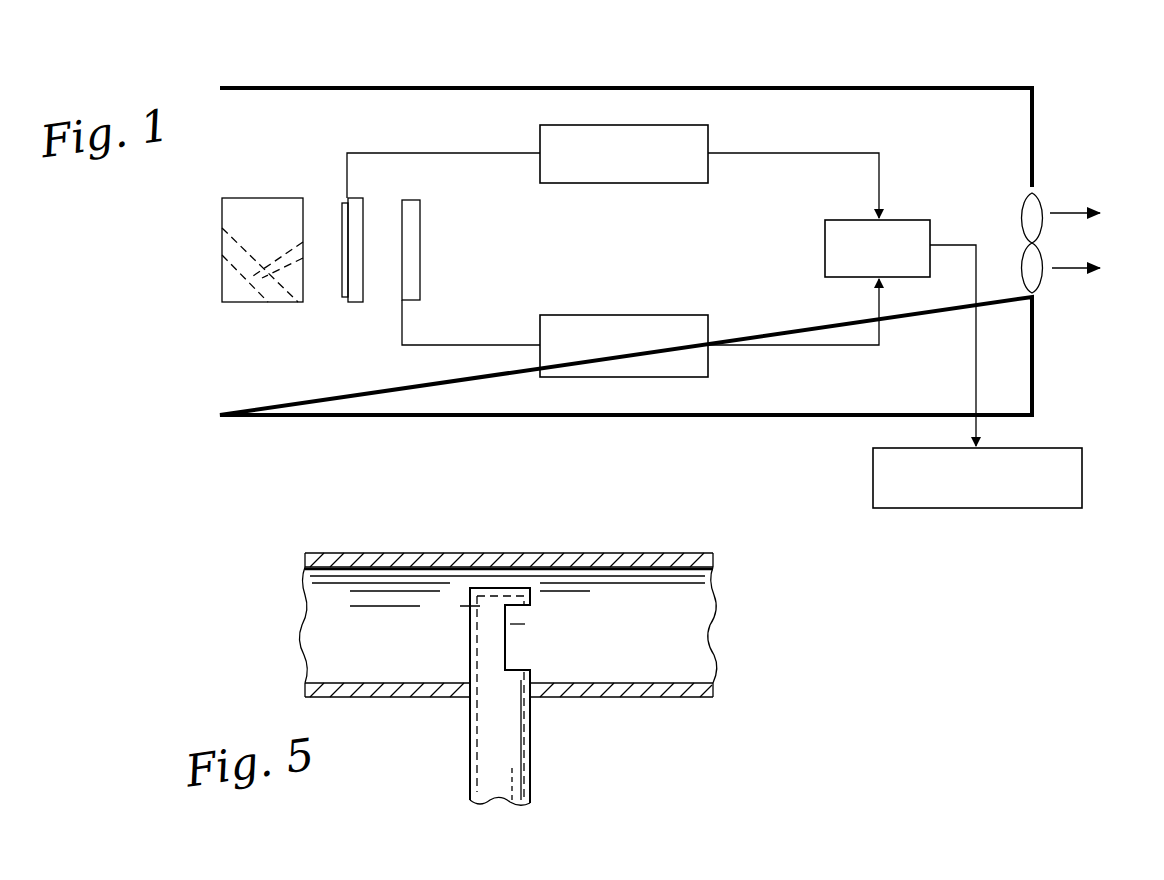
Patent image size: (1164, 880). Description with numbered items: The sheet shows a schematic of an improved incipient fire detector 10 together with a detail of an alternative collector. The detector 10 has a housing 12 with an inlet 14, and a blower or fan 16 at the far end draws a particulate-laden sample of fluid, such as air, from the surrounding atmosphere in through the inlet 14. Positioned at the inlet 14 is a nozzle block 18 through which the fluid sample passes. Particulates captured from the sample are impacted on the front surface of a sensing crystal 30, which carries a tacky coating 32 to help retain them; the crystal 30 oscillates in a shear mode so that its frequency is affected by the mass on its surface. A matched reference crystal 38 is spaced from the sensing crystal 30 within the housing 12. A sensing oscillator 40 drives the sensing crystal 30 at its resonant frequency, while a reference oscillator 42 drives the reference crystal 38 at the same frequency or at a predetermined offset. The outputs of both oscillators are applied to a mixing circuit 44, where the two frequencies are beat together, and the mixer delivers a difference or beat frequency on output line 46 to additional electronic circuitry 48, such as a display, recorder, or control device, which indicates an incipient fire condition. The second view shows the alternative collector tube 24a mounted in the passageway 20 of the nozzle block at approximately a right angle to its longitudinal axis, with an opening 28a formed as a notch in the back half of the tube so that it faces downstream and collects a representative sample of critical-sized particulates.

In FIG. 1, the incipient fire detector 10 is at (734, 70).
In FIG. 1, the housing 12 is at (843, 87).
In FIG. 1, the inlet 14 is at (208, 230).
In FIG. 1, the blower or fan 16 is at (1040, 200).
In FIG. 1, the nozzle block 18 is at (270, 198).
In FIG. 1, the sensing crystal 30 is at (354, 302).
In FIG. 1, the tacky coating 32 is at (340, 205).
In FIG. 1, the reference crystal 38 is at (420, 300).
In FIG. 1, the sensing oscillator 40 is at (630, 125).
In FIG. 1, the reference oscillator 42 is at (610, 377).
In FIG. 1, the mixing circuit 44 is at (907, 220).
In FIG. 1, the output line 46 is at (976, 392).
In FIG. 1, the electronic circuitry 48 is at (1082, 463).
In FIG. 5, the passageway 20 is at (572, 592).
In FIG. 5, the collector tube 24a is at (467, 625).
In FIG. 5, the opening 28a is at (527, 646).